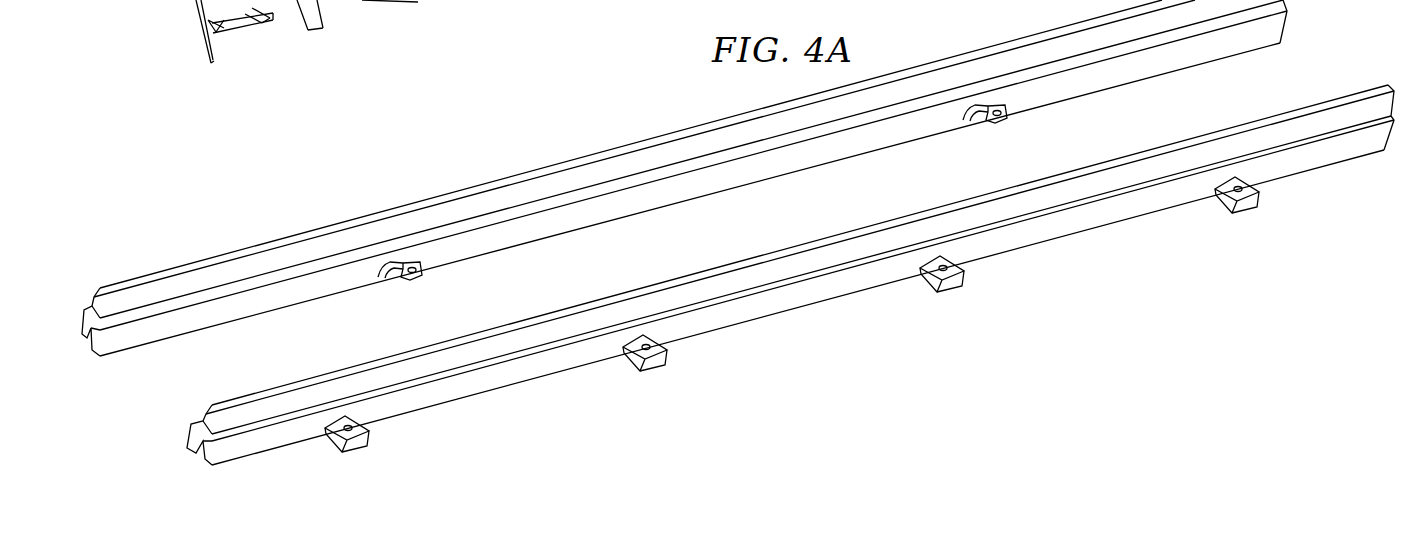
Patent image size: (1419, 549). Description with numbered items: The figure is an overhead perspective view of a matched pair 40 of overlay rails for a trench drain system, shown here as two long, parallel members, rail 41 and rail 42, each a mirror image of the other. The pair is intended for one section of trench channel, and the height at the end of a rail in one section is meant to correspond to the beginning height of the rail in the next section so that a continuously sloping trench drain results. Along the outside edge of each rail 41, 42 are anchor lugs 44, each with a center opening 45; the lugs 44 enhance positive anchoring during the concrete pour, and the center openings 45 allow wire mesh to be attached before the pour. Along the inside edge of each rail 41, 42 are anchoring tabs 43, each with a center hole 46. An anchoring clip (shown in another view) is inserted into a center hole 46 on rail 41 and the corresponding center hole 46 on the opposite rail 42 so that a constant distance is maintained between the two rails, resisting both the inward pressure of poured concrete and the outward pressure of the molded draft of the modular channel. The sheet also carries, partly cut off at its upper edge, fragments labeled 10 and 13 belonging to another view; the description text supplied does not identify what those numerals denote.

The ceiling grid assembly 10 is at (392, 14).
The bracket 13 is at (255, 0).
The matched pair 40 is at (738, 239).
The rail 41 is at (167, 273).
The rail 42 is at (233, 398).
The anchoring tab 43 is at (1008, 117).
The anchor lug 44 is at (1245, 203).
The center opening 45 is at (1241, 186).
The center hole 46 is at (968, 113).